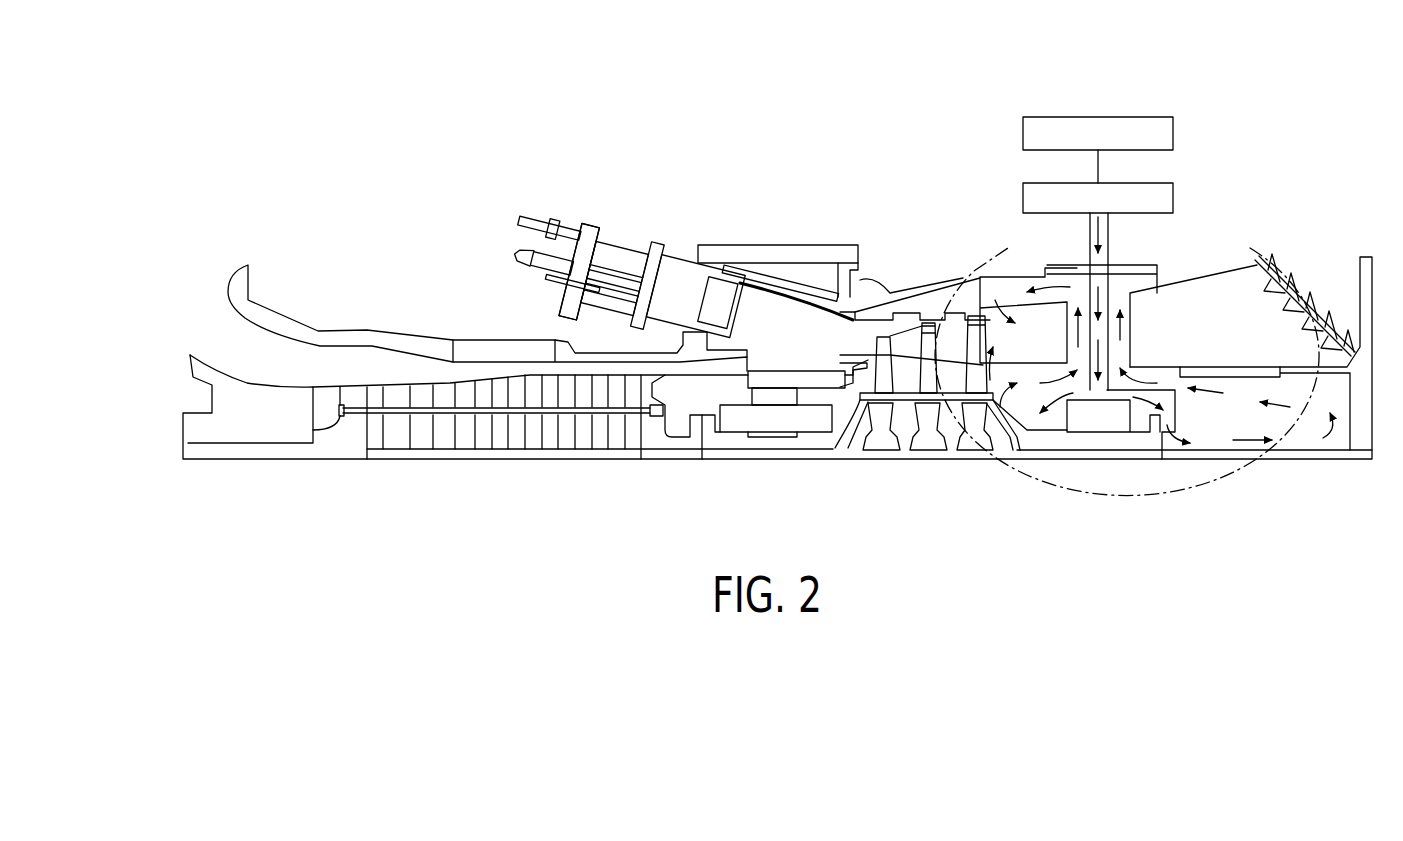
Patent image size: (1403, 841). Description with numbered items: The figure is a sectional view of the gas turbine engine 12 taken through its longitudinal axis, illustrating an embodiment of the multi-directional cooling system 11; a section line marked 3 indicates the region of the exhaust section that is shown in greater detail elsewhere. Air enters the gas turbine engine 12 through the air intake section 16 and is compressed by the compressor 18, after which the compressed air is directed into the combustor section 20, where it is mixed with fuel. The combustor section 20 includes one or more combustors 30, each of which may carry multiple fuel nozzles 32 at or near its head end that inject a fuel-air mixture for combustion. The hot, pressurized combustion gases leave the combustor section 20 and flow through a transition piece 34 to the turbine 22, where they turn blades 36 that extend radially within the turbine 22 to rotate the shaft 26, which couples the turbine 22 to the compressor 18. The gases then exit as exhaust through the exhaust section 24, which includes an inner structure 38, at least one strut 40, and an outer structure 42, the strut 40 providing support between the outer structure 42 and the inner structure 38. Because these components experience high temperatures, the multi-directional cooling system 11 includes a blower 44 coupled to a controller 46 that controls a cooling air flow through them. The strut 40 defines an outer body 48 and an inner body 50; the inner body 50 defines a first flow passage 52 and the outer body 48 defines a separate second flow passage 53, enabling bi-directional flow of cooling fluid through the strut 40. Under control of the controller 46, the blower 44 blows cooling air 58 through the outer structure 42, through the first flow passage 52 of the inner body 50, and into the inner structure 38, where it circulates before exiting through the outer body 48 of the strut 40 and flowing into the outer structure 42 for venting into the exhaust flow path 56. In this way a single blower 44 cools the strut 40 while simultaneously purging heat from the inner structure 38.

The multi-directional cooling system 11 is at (1170, 92).
The gas turbine engine 12 is at (692, 486).
The air intake section 16 is at (243, 362).
The compressor 18 is at (604, 336).
The combustor section 20 is at (750, 150).
The turbine 22 is at (921, 402).
The exhaust section 24 is at (1358, 493).
The shaft 26 is at (1002, 493).
The combustor 30 is at (500, 242).
The fuel nozzle 32 is at (625, 273).
The transition piece 34 is at (772, 278).
The blades 36 is at (972, 332).
The inner structure 38 is at (1237, 360).
The strut 40 is at (1136, 341).
The outer structure 42 is at (1028, 273).
The blower 44 is at (1175, 198).
The controller 46 is at (1175, 134).
The outer body 48 is at (1133, 297).
The inner body 50 is at (1084, 350).
The first flow passage 52 is at (1090, 355).
The second flow passage 53 is at (1120, 356).
The exhaust flow path 56 is at (1199, 343).
The cooling air 58 is at (1104, 227).
The section line 3- 3 is at (1024, 242).